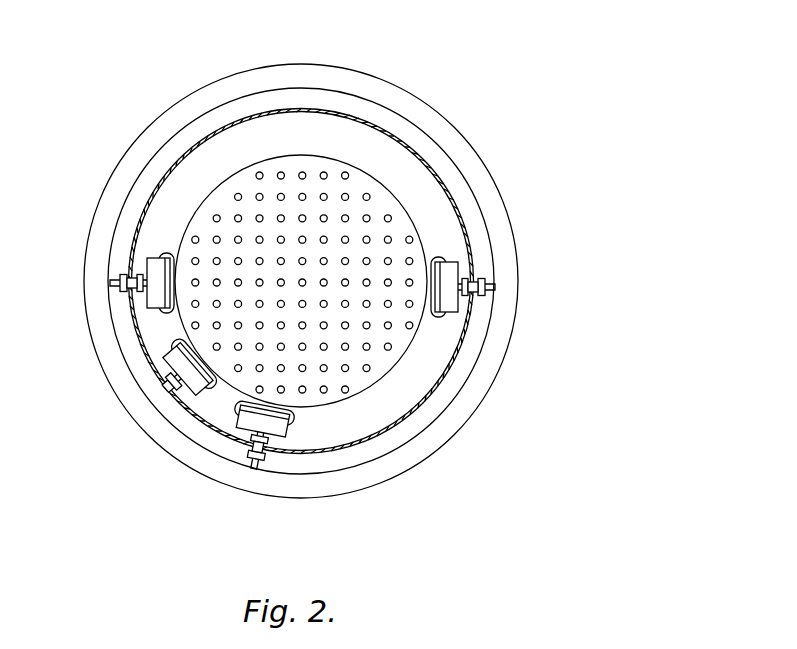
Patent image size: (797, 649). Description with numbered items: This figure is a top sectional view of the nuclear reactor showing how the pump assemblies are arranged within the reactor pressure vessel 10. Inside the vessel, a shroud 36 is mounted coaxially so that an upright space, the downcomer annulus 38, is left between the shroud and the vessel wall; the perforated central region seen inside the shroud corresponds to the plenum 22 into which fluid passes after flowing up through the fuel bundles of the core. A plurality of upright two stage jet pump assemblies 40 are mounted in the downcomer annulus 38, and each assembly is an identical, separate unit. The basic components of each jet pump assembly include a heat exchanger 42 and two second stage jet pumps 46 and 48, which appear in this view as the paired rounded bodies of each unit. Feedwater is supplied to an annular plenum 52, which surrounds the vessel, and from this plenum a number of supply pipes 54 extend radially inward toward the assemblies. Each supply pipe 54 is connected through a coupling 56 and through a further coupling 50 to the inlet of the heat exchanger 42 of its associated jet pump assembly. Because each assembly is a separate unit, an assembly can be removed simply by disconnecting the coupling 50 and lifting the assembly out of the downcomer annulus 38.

The reactor pressure vessel 10 is at (453, 365).
The plenum 22 is at (386, 209).
The shroud 36 is at (410, 420).
The downcomer annulus 38 is at (331, 431).
The jet pump assembly 40 is at (313, 360).
The heat exchanger 42 is at (458, 272).
The second stage jet pump 46 is at (450, 315).
The second stage jet pump 48 is at (447, 257).
The coupling 50 is at (164, 379).
The annular plenum 52 is at (254, 77).
The supply pipe 54 is at (168, 393).
The coupling 56 is at (158, 388).